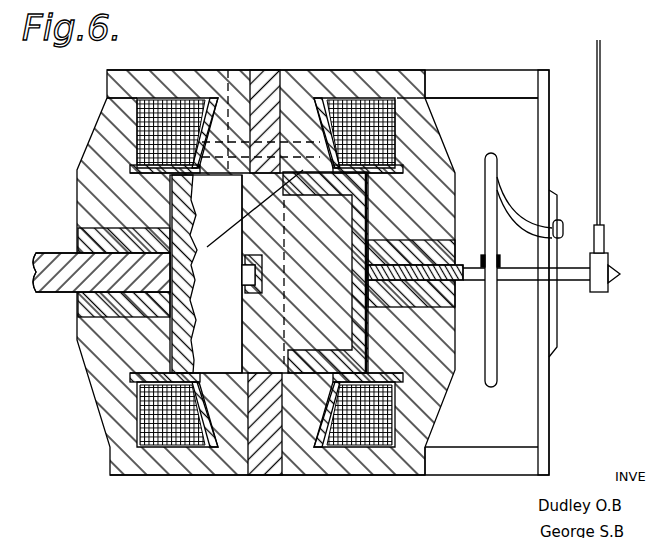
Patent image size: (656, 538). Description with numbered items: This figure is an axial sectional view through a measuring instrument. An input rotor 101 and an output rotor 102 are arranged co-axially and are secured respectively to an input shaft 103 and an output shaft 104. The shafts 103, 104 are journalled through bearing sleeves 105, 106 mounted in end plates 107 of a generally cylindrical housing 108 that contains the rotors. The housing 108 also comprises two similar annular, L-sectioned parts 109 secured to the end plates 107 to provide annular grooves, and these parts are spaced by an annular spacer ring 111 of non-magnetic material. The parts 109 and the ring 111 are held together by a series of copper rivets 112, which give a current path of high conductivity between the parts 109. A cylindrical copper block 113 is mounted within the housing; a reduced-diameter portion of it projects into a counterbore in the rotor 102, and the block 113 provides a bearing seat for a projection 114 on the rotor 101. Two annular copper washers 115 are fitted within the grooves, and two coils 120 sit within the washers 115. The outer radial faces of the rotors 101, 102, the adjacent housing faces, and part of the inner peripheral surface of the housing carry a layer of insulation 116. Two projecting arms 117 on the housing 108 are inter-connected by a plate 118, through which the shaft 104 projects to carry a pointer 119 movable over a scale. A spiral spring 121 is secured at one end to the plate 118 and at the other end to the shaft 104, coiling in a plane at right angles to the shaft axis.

The input rotor 101 is at (236, 292).
The output rotor 102 is at (300, 365).
The input shaft 103 is at (57, 270).
The output shaft 104 is at (523, 273).
The bearing sleeve 105 is at (93, 248).
The bearing sleeve 106 is at (442, 232).
The end plate 107 is at (96, 126).
The housing 108 is at (322, 70).
The annular L-sectioned part 109 is at (133, 70).
The annular spacer ring 111 is at (258, 92).
The copper rivet 112 is at (228, 72).
The cylindrical copper block 113 is at (368, 360).
The projection 114 is at (242, 288).
The annular copper washer 115 is at (142, 424).
The layer of insulation 116 is at (178, 213).
The projecting arm 117 is at (440, 68).
The plate 118 is at (548, 80).
The pointer 119 is at (597, 108).
The coil 120 is at (150, 408).
The spiral spring 121 is at (488, 343).